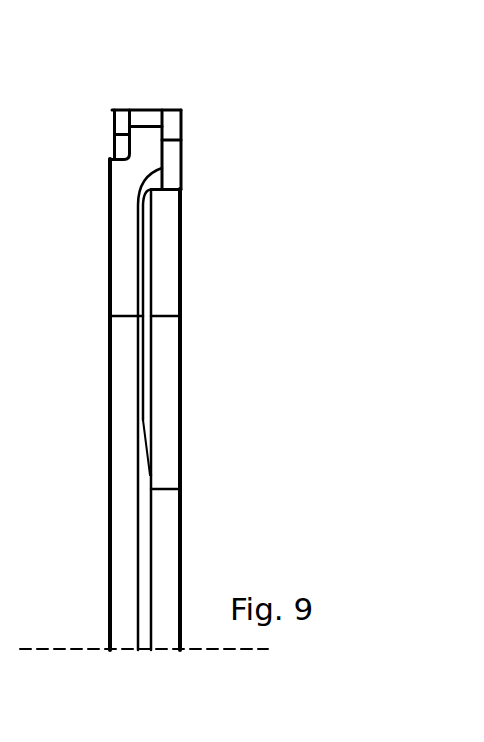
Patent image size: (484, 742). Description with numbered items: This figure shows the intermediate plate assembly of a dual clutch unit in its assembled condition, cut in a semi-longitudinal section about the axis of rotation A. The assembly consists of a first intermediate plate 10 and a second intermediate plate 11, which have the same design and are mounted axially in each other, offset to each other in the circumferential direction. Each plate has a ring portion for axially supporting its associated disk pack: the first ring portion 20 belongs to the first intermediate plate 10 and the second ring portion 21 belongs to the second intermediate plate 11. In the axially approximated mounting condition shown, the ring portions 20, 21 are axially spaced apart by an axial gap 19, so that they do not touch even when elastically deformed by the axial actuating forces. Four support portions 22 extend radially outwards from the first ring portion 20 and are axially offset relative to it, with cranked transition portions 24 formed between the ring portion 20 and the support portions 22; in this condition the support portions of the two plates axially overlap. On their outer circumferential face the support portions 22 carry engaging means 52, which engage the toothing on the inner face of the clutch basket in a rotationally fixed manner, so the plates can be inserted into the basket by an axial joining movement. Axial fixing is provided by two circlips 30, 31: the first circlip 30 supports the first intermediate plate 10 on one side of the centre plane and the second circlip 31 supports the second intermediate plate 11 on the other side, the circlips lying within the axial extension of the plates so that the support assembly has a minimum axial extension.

The first intermediate plate 10 is at (156, 325).
The second intermediate plate 11 is at (182, 212).
The axial gap 19 is at (150, 539).
The first ring portion 20 is at (117, 237).
The second ring portion 21 is at (177, 257).
The first support portions 22 is at (153, 105).
The cranked transition portions 24 is at (138, 171).
The first circlip 30 is at (113, 108).
The second circlip 31 is at (171, 108).
The engaging means 52 is at (143, 108).
The axis of rotation A is at (40, 648).